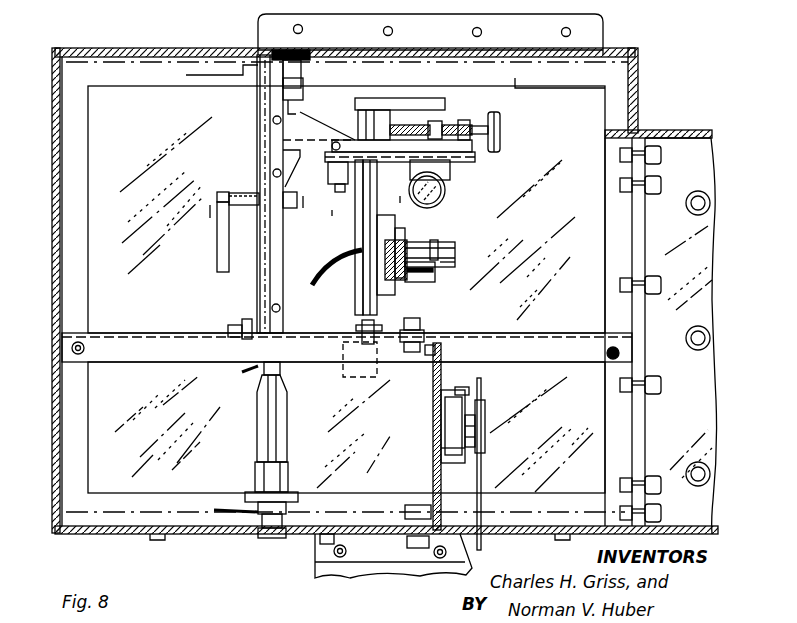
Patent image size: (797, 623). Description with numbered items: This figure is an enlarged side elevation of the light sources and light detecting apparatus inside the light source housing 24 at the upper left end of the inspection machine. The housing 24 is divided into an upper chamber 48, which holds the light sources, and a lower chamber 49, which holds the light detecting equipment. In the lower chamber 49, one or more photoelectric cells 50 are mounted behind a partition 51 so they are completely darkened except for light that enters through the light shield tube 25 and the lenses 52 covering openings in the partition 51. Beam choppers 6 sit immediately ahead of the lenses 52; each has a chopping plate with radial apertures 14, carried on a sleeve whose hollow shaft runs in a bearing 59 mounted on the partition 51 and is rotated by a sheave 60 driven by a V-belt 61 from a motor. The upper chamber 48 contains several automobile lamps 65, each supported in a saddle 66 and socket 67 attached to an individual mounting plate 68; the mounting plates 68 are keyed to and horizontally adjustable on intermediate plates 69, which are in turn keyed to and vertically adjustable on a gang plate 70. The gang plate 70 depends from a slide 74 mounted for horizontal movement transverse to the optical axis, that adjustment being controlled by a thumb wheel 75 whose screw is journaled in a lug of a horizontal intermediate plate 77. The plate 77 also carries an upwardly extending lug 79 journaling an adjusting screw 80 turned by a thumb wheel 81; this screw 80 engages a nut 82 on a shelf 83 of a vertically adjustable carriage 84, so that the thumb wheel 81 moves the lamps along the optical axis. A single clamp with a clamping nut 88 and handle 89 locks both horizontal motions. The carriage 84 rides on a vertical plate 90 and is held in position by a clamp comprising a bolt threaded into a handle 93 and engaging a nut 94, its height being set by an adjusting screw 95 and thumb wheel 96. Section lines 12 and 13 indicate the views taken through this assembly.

The beam chopper 6 is at (458, 433).
The section line 12 is at (186, 90).
The section line 13 is at (210, 218).
The aperture 14 is at (332, 216).
The light source housing 24 is at (50, 155).
The light shield tube 25 is at (679, 160).
The upper chamber 48 is at (129, 126).
The lower chamber 49 is at (130, 391).
The photoelectric cell 50 is at (268, 430).
The partition 51 is at (433, 466).
The lens 52 is at (432, 420).
The bearing 59 is at (472, 392).
The sheave 60 is at (487, 407).
The V-belt 61 is at (478, 478).
The automobile lamp 65 is at (445, 260).
The saddle 66 is at (428, 282).
The socket 67 is at (390, 278).
The mounting plate 68 is at (380, 250).
The intermediate plate 69 is at (365, 282).
The gang plate 70 is at (355, 275).
The slide 74 is at (346, 163).
The thumb wheel 75 is at (430, 192).
The horizontal intermediate plate 77 is at (462, 162).
The upwardly extending lug 79 is at (470, 133).
The adjusting screw 80 is at (450, 130).
The thumb wheel 81 is at (503, 142).
The nut 82 is at (432, 128).
The shelf 83 is at (357, 144).
The vertically adjustable carriage 84 is at (276, 147).
The clamping nut 88 is at (372, 124).
The handle 89 is at (402, 104).
The vertical plate 90 is at (263, 163).
The handle 93 is at (228, 192).
The nut 94 is at (292, 190).
The adjusting screw 95 is at (293, 108).
The thumb wheel 96 is at (302, 55).